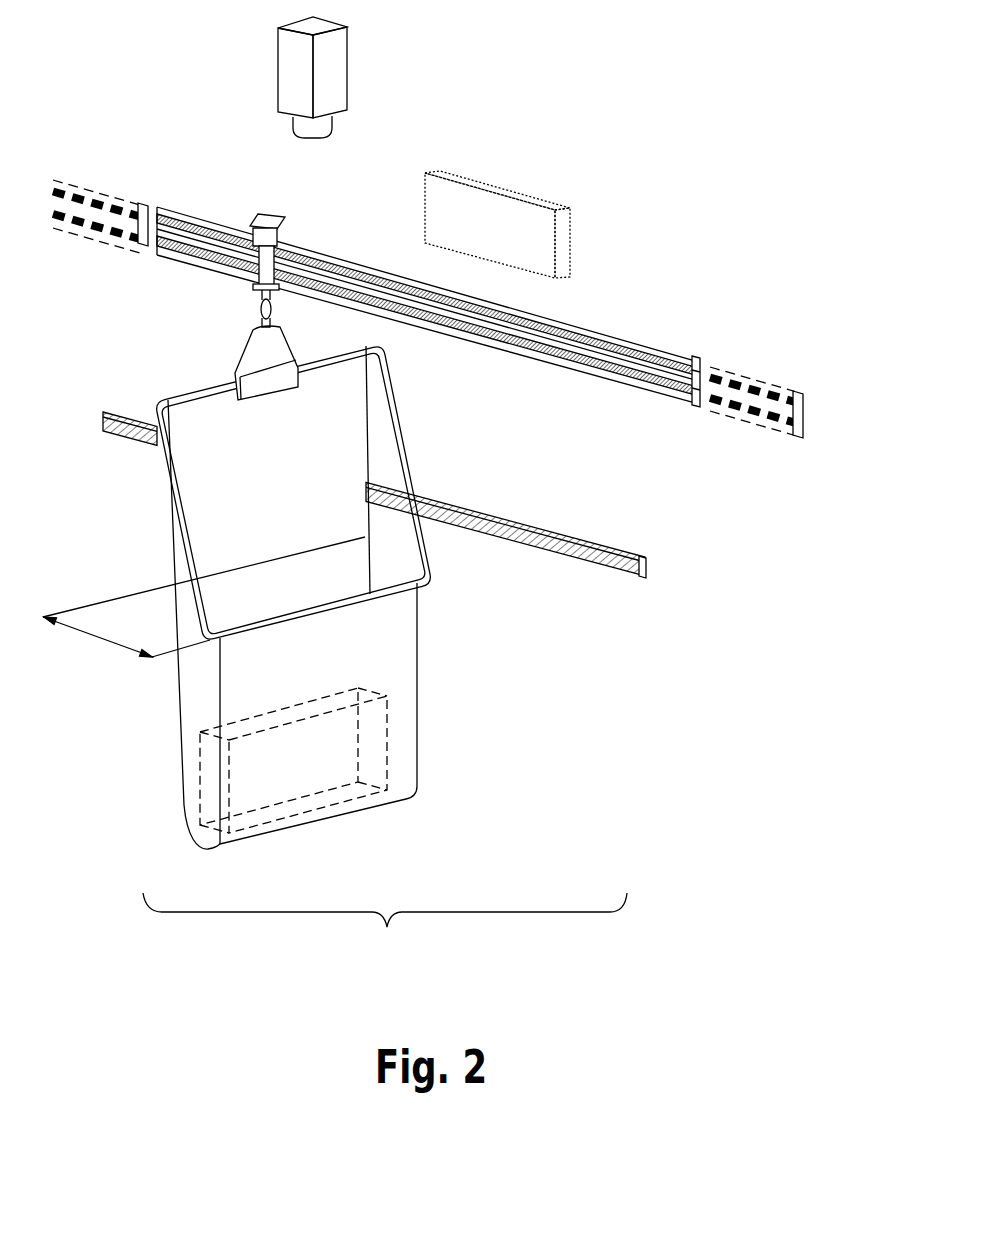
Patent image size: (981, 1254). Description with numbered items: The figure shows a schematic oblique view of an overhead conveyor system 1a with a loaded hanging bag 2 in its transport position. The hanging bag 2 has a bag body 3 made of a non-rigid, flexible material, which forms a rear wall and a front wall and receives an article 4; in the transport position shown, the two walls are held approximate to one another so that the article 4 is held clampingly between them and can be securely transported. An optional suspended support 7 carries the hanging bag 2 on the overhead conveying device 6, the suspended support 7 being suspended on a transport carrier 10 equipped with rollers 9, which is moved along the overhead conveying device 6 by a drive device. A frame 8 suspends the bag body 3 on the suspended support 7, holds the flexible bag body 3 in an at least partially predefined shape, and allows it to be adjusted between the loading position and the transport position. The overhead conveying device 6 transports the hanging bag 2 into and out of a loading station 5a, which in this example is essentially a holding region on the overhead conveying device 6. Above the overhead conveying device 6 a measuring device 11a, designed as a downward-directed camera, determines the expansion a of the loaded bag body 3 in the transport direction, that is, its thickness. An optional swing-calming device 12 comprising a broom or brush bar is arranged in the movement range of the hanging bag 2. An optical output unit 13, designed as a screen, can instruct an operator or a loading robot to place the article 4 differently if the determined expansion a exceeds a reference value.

The overhead conveyor system 1a is at (218, 59).
The measuring device 11a is at (333, 67).
The rollers 9 is at (257, 240).
The transport carrier 10 is at (272, 272).
The optical output unit 13 is at (563, 233).
The overhead conveying device 6 is at (592, 353).
The suspended support 7 is at (260, 360).
The frame 8 is at (178, 538).
The swing-calming device 12 is at (646, 567).
The bag body 3 is at (378, 617).
The article 4 is at (207, 783).
The hanging bag 2 is at (131, 720).
The expansion a is at (126, 644).
The loading station 5a is at (385, 932).